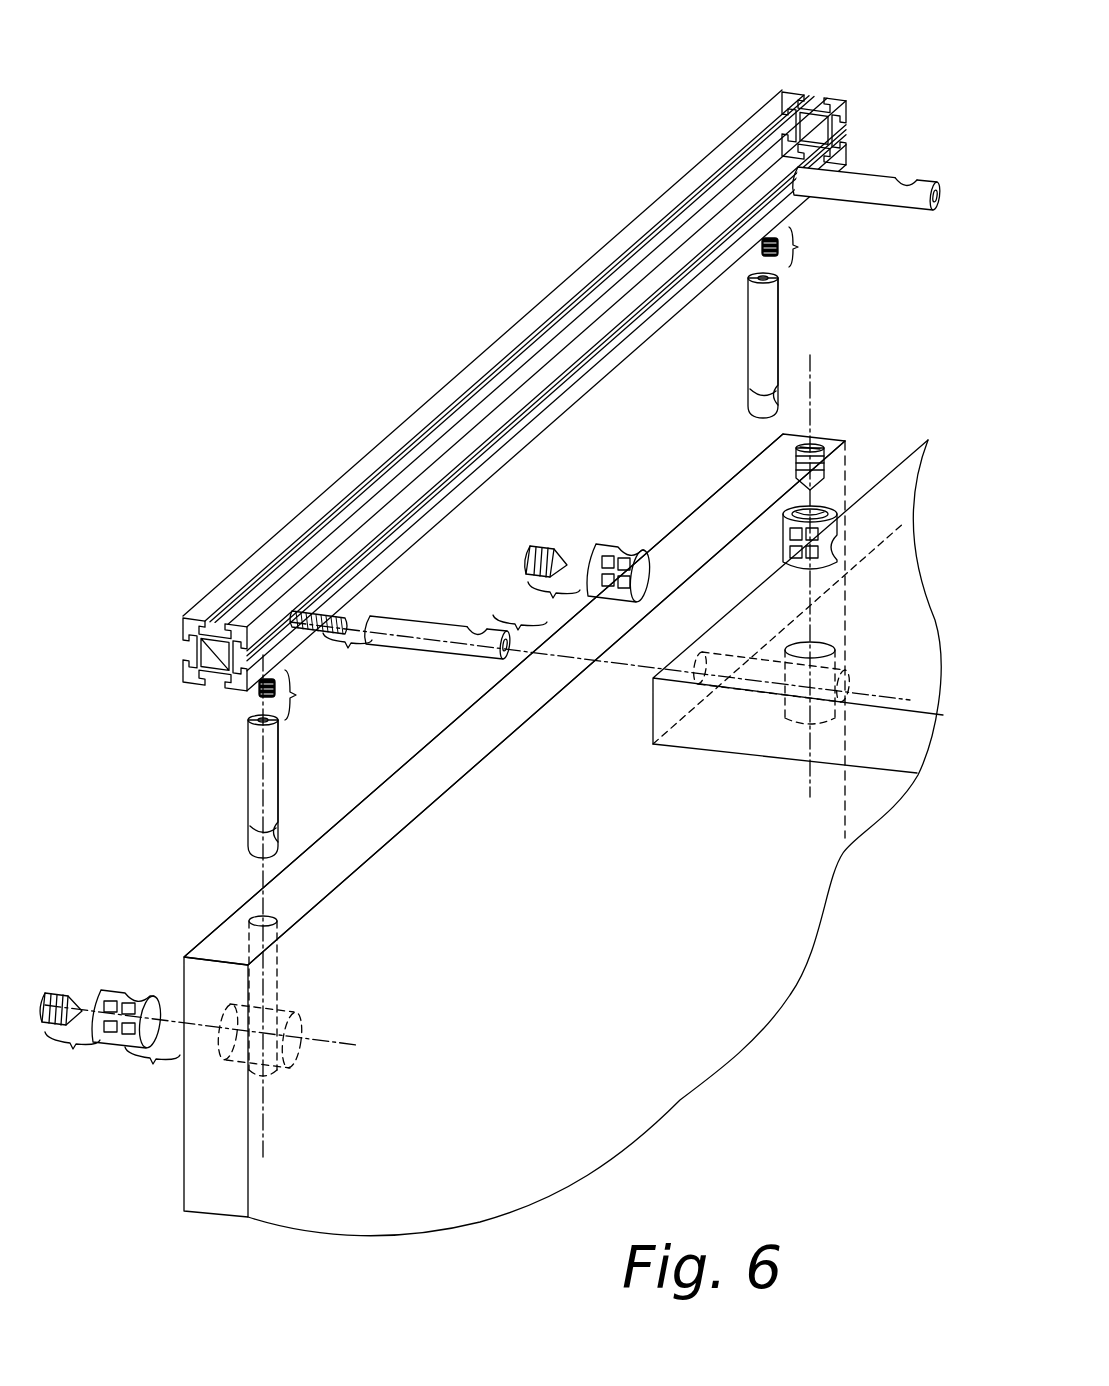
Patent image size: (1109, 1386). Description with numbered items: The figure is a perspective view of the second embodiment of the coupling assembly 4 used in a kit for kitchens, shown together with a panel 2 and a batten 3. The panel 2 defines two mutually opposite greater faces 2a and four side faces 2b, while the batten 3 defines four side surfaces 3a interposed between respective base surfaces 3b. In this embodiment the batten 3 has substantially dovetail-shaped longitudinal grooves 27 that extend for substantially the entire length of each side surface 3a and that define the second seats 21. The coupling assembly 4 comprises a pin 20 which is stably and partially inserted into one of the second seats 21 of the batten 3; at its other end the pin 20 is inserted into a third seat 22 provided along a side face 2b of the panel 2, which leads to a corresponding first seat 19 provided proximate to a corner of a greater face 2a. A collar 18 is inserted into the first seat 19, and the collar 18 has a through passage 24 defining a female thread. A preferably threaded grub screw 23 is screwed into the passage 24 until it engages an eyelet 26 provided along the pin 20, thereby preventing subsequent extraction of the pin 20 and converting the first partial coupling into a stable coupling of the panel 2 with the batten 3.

The panel 2 is at (905, 642).
The greater face 2a is at (920, 776).
The side face 2b is at (452, 756).
The batten 3 is at (476, 362).
The side surface 3a is at (790, 94).
The base surface 3b is at (212, 702).
The coupling assembly 4 is at (156, 860).
The collar 18 is at (610, 544).
The first seat 19 is at (302, 1010).
The pin 20 is at (866, 186).
The second seat 21 is at (651, 330).
The third seat 22 is at (280, 917).
The grub screw 23 is at (548, 546).
The through passage 24 is at (798, 512).
The eyelet 26 is at (906, 184).
The longitudinal groove 27 is at (625, 264).